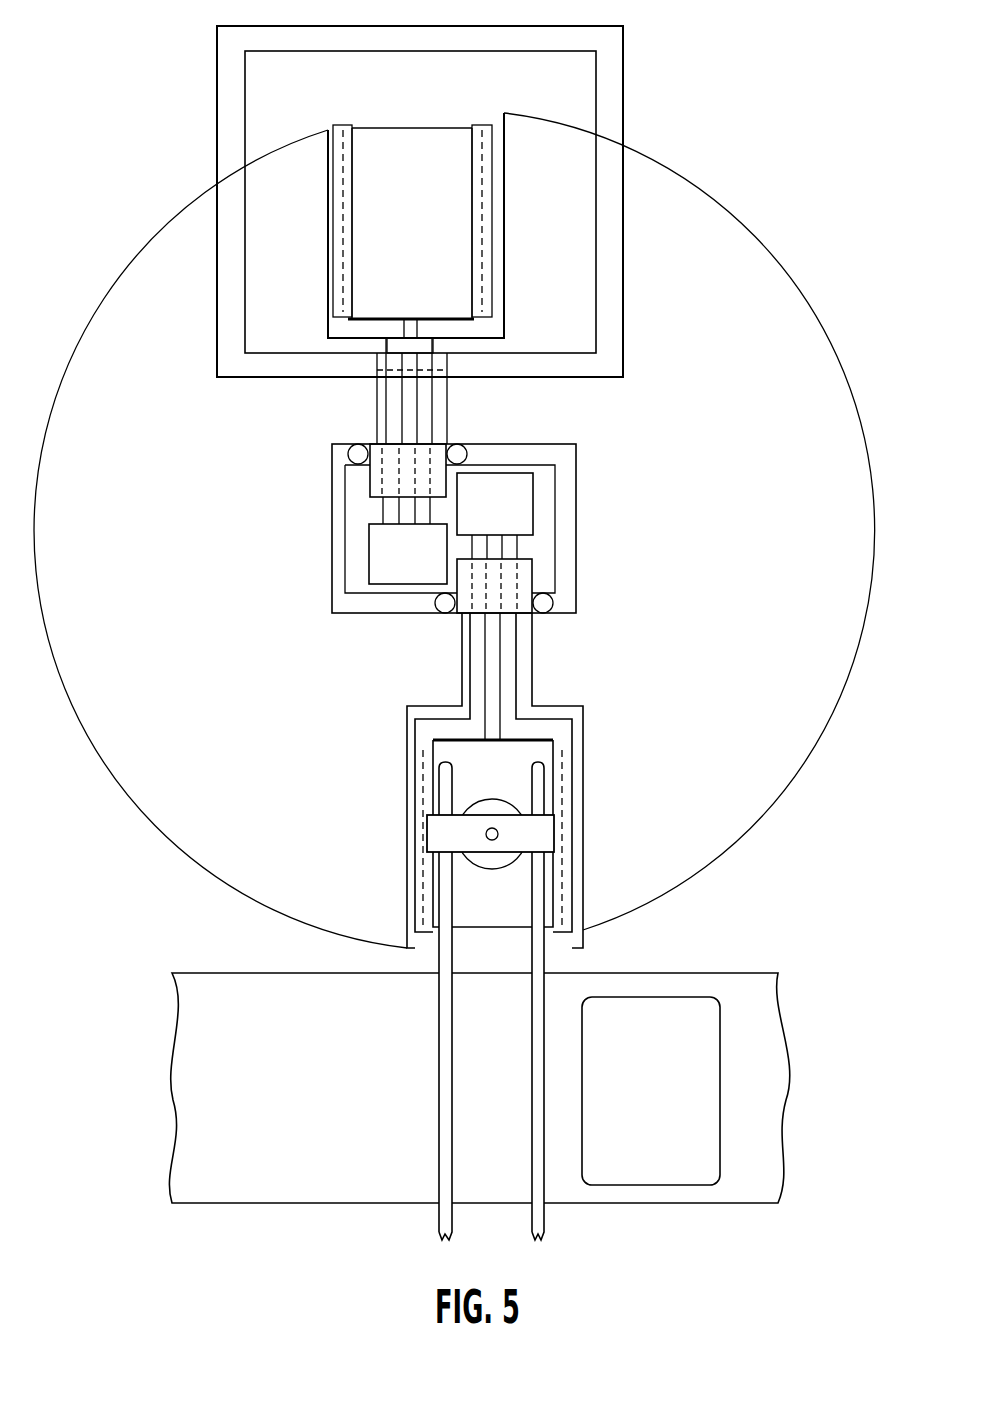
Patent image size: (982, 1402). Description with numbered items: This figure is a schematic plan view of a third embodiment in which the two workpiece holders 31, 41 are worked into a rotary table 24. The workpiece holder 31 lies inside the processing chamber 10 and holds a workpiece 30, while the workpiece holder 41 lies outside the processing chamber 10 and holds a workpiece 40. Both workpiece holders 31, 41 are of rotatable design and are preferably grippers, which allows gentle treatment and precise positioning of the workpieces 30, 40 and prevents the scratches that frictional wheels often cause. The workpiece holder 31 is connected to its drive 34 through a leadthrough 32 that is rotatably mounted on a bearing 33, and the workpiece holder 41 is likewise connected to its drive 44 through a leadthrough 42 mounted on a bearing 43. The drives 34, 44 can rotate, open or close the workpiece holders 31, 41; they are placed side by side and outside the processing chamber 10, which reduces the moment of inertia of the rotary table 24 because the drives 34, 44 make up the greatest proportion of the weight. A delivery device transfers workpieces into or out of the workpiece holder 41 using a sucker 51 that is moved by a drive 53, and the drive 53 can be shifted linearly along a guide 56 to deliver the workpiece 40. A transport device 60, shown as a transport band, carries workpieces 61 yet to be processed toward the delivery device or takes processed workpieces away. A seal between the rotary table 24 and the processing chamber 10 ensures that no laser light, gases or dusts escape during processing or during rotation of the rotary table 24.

The processing chamber 10 is at (608, 51).
The rotary table 24 is at (775, 300).
The workpiece 30 is at (388, 180).
The workpiece holder 31 is at (483, 135).
The leadthrough 32 is at (380, 483).
The bearing 33 is at (358, 455).
The drive 34 is at (395, 552).
The workpiece 40 is at (467, 884).
The workpiece holder 41 is at (428, 923).
The leadthrough 42 is at (525, 575).
The bearing 43 is at (545, 605).
The drive 44 is at (500, 500).
The sucker 51 is at (490, 858).
The drive 53 is at (533, 833).
The guide 56 is at (537, 958).
The transport device 60 is at (200, 1012).
The workpiece 61 is at (663, 1030).